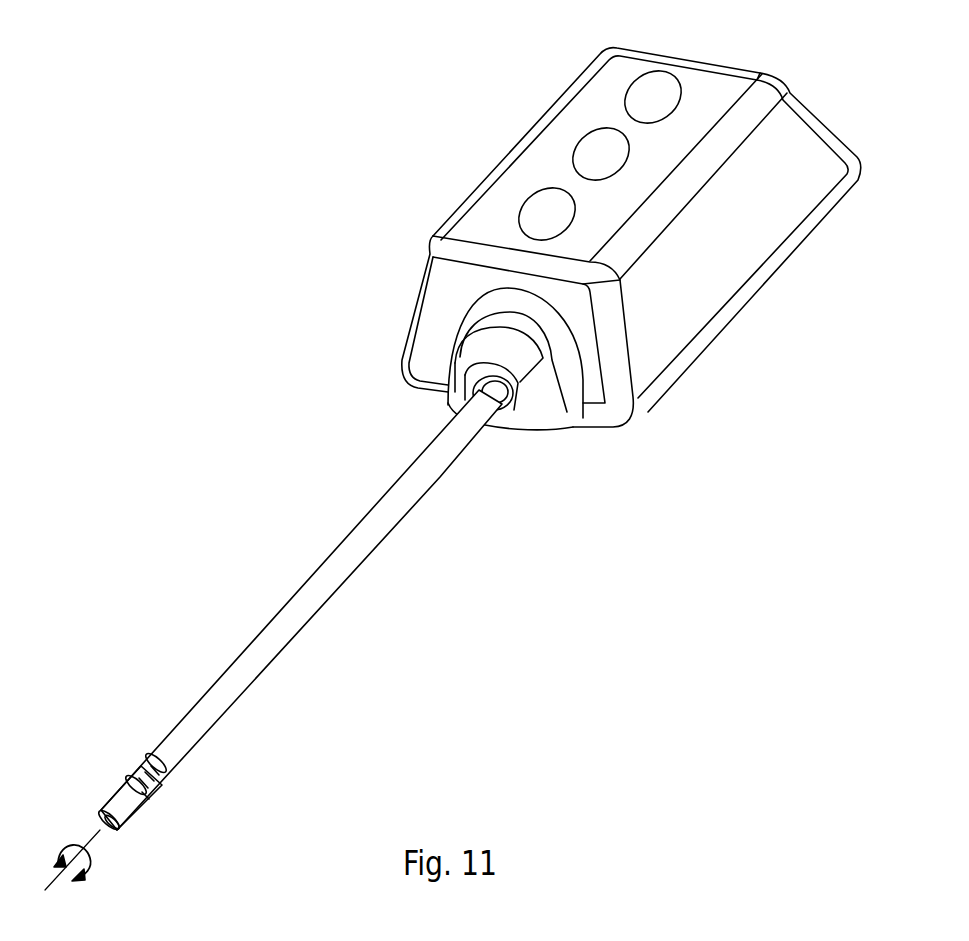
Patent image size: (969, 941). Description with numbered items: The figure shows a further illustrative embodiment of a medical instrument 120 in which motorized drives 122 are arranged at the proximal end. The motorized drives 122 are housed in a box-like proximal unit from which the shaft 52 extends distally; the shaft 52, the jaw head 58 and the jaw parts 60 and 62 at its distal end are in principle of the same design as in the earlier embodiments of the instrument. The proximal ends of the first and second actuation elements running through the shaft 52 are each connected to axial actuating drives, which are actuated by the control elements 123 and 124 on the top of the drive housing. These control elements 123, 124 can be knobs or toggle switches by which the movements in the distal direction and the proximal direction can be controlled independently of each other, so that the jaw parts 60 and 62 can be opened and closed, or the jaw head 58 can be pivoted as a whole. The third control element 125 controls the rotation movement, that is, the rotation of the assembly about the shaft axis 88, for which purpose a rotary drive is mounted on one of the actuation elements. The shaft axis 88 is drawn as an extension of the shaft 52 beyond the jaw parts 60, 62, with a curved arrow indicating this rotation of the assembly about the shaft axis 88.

The medical instrument 120 is at (284, 137).
The motorized drives 122 is at (674, 334).
The control element 123 is at (533, 212).
The control element 124 is at (586, 147).
The control element 125 is at (638, 92).
The shaft 52 is at (327, 570).
The jaw head 58 is at (153, 760).
The jaw part 60 is at (126, 808).
The jaw part 62 is at (100, 822).
The shaft axis 88 is at (62, 882).